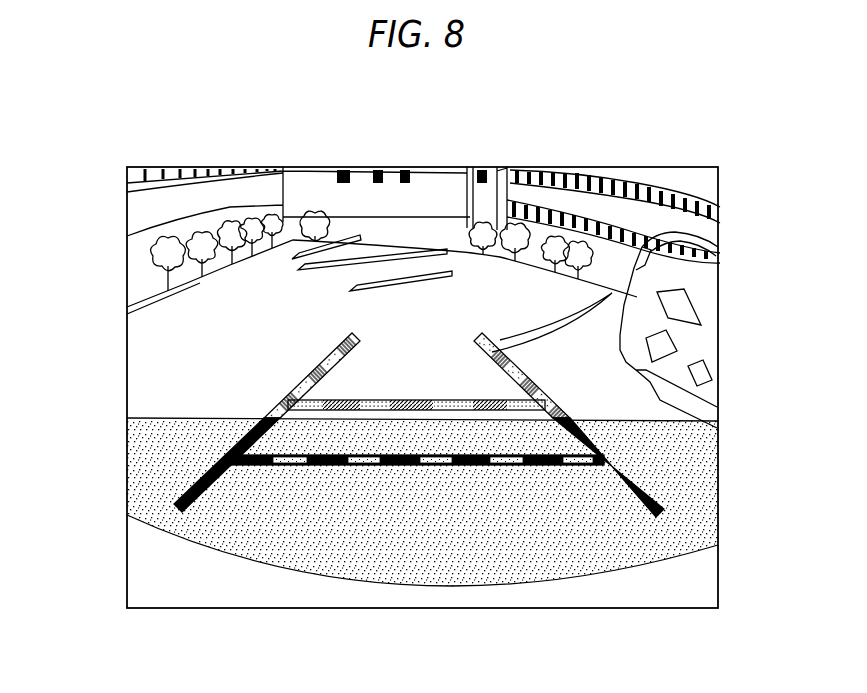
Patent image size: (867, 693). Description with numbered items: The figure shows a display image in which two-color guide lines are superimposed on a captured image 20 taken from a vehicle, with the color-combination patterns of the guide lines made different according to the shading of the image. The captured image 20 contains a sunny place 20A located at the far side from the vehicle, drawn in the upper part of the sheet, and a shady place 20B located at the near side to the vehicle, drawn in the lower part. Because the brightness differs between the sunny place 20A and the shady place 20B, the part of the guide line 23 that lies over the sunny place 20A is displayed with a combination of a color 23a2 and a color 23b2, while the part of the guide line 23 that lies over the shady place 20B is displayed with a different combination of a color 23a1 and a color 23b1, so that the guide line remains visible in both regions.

The captured image 20 is at (127, 223).
The sunny place 20A is at (647, 392).
The shady place 20B is at (697, 452).
The guide line 23 is at (333, 394).
The color 23a1 is at (323, 467).
The color 23a2 is at (340, 400).
The color 23b1 is at (365, 466).
The color 23b2 is at (384, 403).